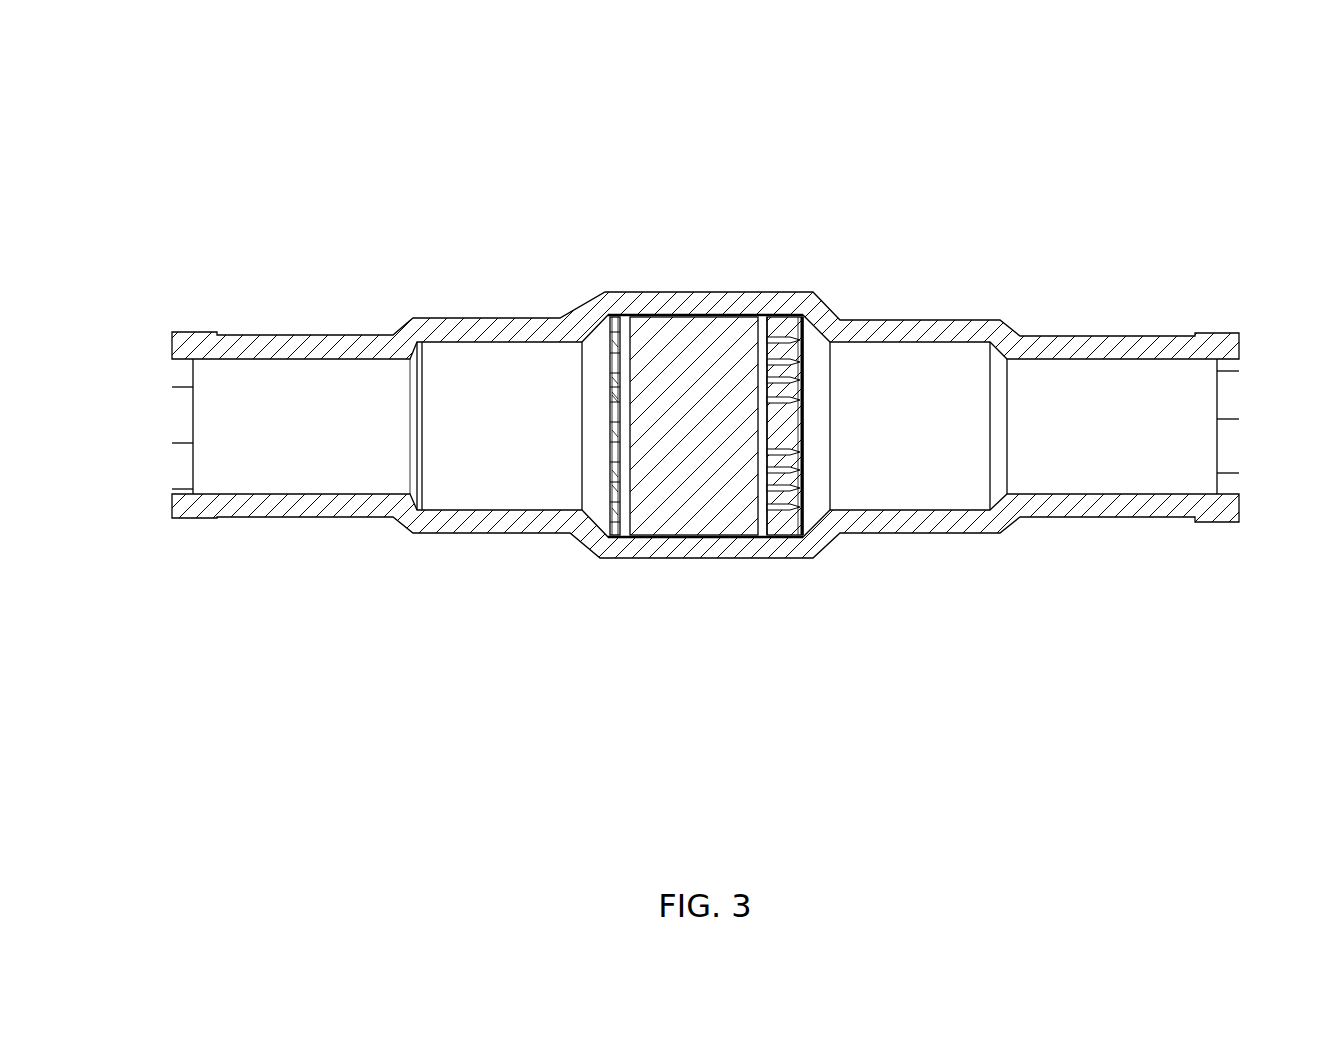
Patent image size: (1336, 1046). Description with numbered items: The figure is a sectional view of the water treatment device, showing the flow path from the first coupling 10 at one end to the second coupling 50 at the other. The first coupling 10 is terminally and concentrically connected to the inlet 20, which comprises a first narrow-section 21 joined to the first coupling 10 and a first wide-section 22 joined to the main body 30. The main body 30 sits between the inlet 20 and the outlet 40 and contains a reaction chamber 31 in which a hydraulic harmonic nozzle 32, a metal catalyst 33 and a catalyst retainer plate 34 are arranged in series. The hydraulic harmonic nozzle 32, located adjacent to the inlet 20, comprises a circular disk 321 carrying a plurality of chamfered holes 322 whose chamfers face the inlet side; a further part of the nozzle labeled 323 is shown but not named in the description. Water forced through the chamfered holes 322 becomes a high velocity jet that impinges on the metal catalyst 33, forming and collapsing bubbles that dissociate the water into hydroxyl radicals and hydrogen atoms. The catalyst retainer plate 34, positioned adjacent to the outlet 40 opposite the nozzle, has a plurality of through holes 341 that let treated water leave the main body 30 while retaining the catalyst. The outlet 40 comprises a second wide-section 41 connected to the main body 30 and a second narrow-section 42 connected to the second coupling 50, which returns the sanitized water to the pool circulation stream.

The first coupling 10 is at (1228, 447).
The inlet 20 is at (1023, 349).
The first narrow-section 21 is at (1112, 345).
The first wide-section 22 is at (918, 324).
The main body 30 is at (710, 355).
The reaction chamber 31 is at (760, 513).
The hydraulic harmonic nozzle 32 is at (830, 384).
The circular disk 321 is at (803, 423).
The chamfered holes 322 is at (803, 413).
The plate end wall 323 is at (803, 345).
The metal catalyst 33 is at (715, 527).
The catalyst retainer plate 34 is at (573, 375).
The through holes 341 is at (613, 398).
The outlet 40 is at (387, 498).
The second wide-section 41 is at (477, 527).
The second narrow-section 42 is at (265, 508).
The second coupling 50 is at (180, 432).